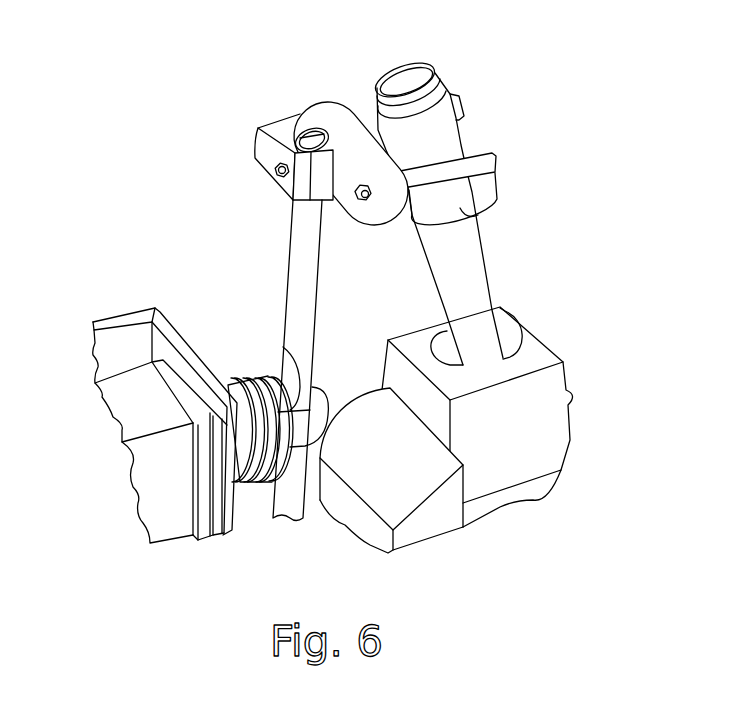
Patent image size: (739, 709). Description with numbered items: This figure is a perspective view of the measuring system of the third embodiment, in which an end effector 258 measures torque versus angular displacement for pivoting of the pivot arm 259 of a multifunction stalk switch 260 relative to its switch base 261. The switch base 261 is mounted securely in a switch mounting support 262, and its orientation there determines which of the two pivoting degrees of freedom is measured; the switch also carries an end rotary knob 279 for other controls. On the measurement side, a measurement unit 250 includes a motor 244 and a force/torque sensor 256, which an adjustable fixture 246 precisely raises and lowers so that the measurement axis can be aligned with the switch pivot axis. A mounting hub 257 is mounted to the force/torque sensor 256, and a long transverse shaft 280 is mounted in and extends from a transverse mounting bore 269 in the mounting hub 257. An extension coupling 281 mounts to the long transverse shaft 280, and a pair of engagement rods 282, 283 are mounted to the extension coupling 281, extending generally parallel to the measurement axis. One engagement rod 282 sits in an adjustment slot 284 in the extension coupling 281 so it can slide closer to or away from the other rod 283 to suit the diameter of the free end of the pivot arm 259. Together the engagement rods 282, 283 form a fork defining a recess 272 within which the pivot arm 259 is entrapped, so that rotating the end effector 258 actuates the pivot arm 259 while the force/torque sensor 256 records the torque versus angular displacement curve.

The motor 244 is at (172, 545).
The adjustable fixture 246 is at (125, 318).
The measurement unit 250 is at (163, 400).
The force/torque sensor 256 is at (254, 503).
The mounting hub 257 is at (332, 415).
The end effector 258 is at (269, 173).
The pivot arm 259 is at (485, 262).
The multifunction stalk switch 260 is at (564, 356).
The switch base 261 is at (574, 408).
The switch mounting support 262 is at (431, 540).
The transverse mounting bore 269 is at (283, 347).
The recess 272 is at (495, 193).
The end rotary knob 279 is at (459, 199).
The long transverse shaft 280 is at (286, 258).
The extension coupling 281 is at (256, 156).
The engagement rod 282 is at (497, 163).
The engagement rod 283 is at (461, 103).
The adjustment slot 284 is at (340, 210).